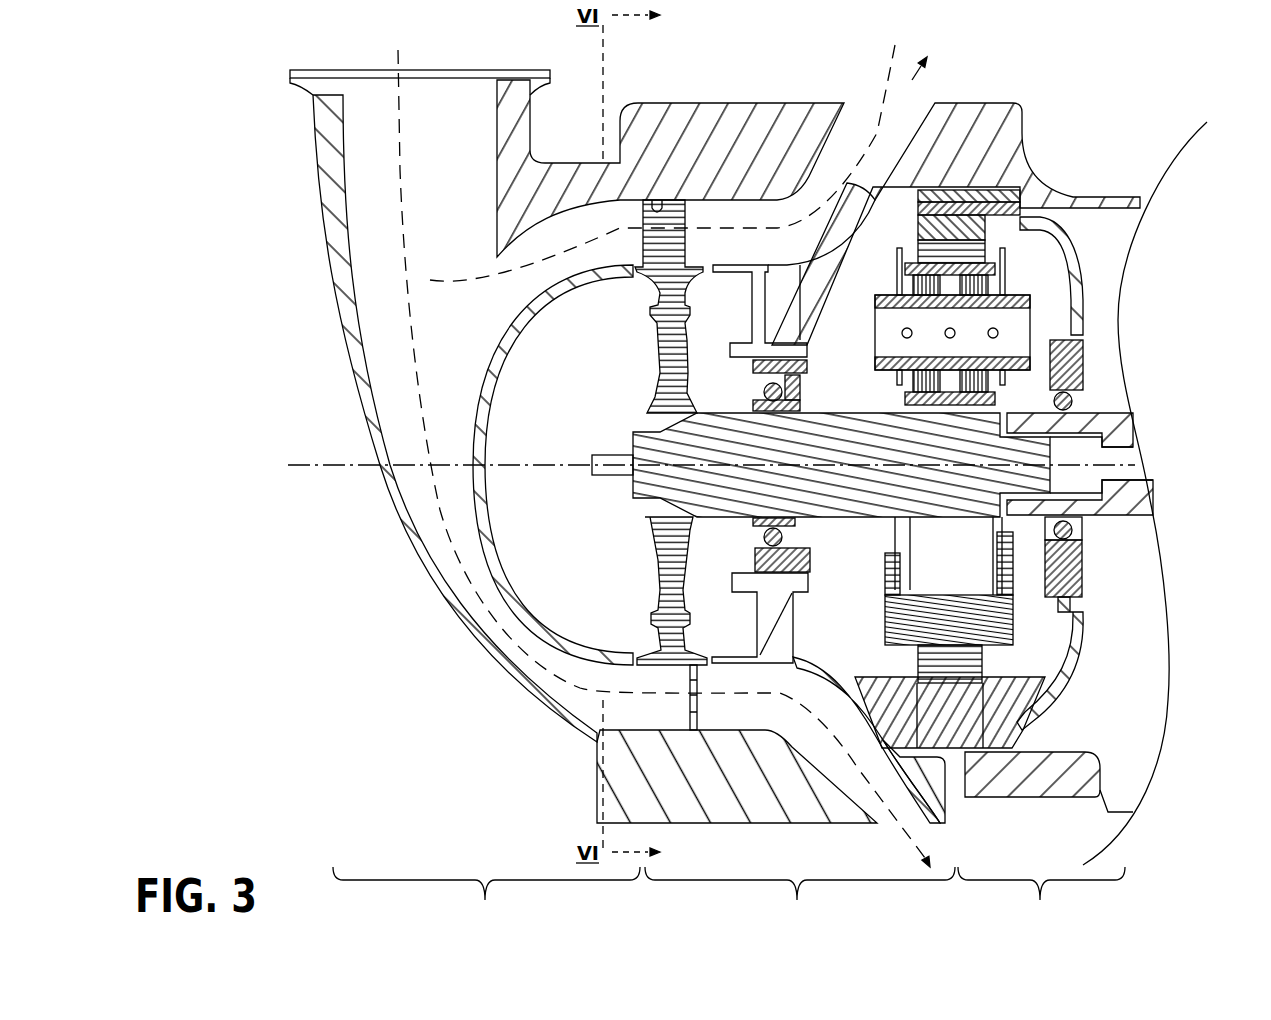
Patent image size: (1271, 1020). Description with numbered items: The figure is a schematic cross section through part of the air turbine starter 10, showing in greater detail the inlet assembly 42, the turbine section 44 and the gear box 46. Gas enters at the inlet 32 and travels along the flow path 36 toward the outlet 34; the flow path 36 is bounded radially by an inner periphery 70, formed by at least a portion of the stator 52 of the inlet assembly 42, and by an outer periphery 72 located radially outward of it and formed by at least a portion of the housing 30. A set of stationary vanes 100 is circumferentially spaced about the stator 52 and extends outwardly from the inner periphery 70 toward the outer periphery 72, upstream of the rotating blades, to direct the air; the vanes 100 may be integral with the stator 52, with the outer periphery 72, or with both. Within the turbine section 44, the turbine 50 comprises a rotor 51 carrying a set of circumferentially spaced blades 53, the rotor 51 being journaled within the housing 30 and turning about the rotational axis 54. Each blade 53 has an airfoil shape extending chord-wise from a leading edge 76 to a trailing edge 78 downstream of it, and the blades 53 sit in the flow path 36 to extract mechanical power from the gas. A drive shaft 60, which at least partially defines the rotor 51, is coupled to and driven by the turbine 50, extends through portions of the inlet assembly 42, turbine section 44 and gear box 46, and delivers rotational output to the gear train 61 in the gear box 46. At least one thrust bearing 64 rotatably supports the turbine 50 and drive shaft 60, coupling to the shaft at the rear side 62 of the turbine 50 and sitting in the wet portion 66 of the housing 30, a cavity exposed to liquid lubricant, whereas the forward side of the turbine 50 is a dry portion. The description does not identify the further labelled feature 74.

The air turbine starter 10 is at (688, 58).
The housing 30 is at (830, 100).
The inlet 32 is at (365, 70).
The outlet 34 is at (917, 98).
The flow path 36 is at (400, 176).
The inlet assembly 42 is at (486, 897).
The turbine section 44 is at (800, 897).
The gear box 46 is at (1041, 897).
The turbine 50 is at (647, 593).
The rotor 51 is at (633, 482).
The stator 52 is at (490, 356).
The set of circumferentially spaced blades 53 is at (690, 220).
The rotational axis 54 is at (312, 468).
The drive shaft 60 is at (812, 402).
The gear train 61 is at (1040, 272).
The rear side 62 is at (1198, 455).
The thrust bearing 64 is at (790, 540).
The wet portion 66 is at (815, 580).
The inner periphery 70 is at (547, 283).
The outer periphery 72 is at (530, 228).
The inlet region 74 is at (243, 648).
The leading edge 76 is at (655, 214).
The trailing edge 78 is at (705, 235).
The set of vanes 100 is at (613, 205).